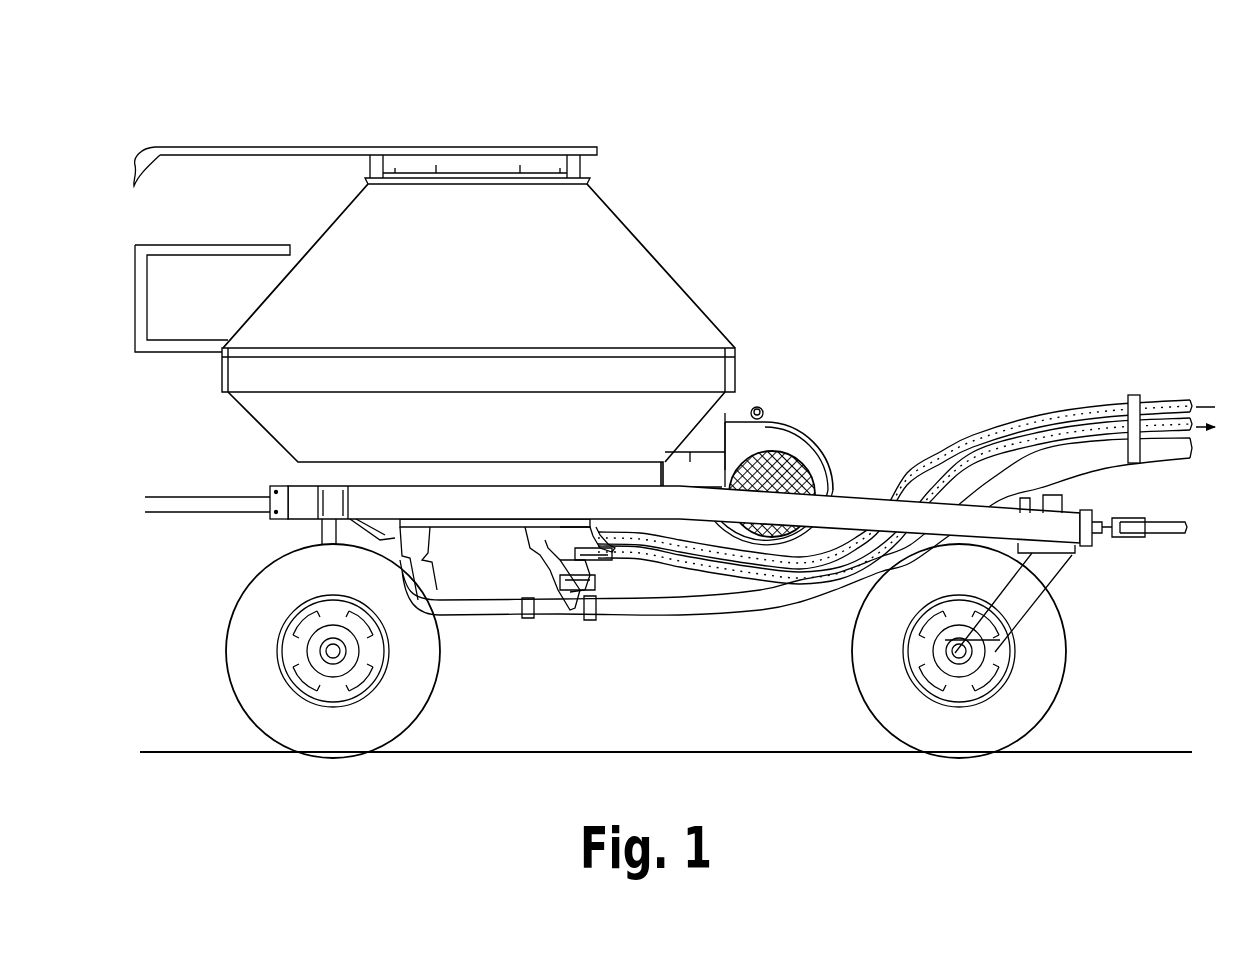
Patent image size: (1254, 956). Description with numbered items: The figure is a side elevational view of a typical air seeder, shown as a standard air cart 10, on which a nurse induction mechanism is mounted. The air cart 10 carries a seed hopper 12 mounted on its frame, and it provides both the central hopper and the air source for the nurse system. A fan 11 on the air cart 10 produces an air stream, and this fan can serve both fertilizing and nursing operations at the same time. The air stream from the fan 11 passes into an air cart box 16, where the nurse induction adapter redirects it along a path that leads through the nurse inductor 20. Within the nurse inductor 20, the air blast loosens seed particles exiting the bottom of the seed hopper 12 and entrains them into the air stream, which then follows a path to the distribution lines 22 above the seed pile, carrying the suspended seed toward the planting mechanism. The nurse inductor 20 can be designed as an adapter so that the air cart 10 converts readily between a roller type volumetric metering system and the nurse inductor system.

The air cart 10 is at (704, 132).
The fan 11 is at (787, 417).
The seed hopper 12 is at (640, 236).
The air cart box 16 is at (527, 548).
The nurse inductor 20 is at (600, 571).
The distribution lines 22 is at (986, 428).